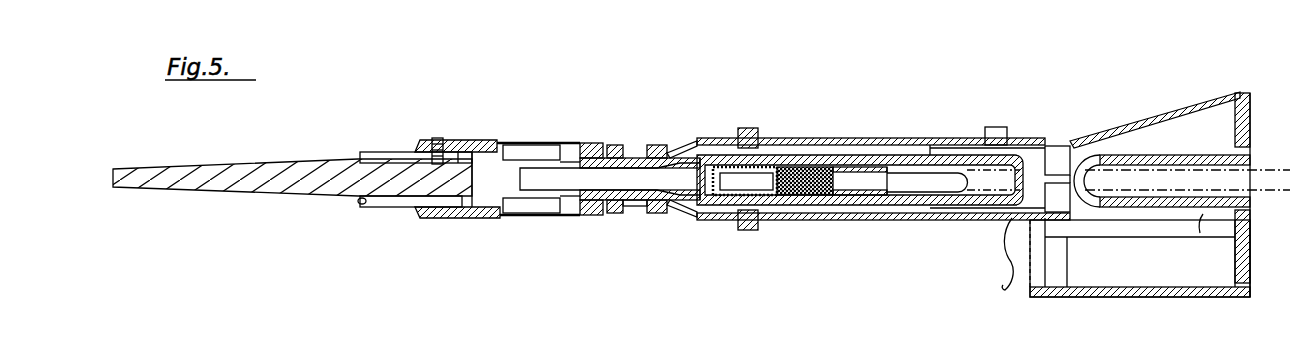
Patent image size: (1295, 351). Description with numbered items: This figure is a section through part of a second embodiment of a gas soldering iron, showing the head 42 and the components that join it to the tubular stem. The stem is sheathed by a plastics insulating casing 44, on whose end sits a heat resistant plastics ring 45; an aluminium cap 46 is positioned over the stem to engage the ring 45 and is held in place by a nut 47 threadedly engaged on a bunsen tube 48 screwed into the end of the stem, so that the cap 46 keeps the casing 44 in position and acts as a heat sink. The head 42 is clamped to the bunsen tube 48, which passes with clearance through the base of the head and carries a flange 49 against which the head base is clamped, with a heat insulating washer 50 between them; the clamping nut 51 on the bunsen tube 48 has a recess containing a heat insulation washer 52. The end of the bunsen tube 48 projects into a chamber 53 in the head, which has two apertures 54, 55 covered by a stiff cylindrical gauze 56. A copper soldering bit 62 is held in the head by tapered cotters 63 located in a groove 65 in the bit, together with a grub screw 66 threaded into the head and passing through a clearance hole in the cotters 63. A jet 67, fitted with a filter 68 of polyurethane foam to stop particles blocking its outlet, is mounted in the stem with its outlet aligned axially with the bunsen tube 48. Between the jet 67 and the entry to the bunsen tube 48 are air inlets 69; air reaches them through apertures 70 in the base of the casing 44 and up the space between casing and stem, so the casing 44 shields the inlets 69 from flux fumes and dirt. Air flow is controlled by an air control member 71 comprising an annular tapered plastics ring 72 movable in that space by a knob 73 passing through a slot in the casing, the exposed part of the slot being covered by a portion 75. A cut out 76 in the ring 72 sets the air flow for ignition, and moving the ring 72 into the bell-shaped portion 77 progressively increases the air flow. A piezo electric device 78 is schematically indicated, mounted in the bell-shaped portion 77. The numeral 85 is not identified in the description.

The head 42 is at (494, 138).
The plastics insulating casing 44 is at (805, 138).
The heat resistant plastics ring 45 is at (746, 130).
The aluminium cap 46 is at (703, 145).
The nut 47 is at (655, 213).
The bunsen tube 48 is at (632, 158).
The flange 49 is at (567, 214).
The heat insulating washer 50 is at (590, 146).
The nut 51 is at (615, 213).
The heat insulation washer 52 is at (590, 212).
The chamber 53 is at (483, 198).
The aperture 54 is at (540, 148).
The aperture 55 is at (523, 207).
The stiff cylindrical gauze 56 is at (518, 142).
The copper soldering bit 62 is at (185, 167).
The tapered cotter 63 is at (385, 152).
The groove 65 is at (360, 204).
The grub screw 66 is at (439, 138).
The jet 67 is at (765, 195).
The filter 68 is at (817, 173).
The air inlets 69 is at (718, 155).
The apertures 70 is at (1240, 96).
The air control member 71 is at (953, 140).
The annular tapered plastics ring 72 is at (1057, 146).
The knob 73 is at (992, 127).
The portion 75 is at (990, 150).
The cut out 76 is at (1062, 183).
The bell-shaped portion 77 is at (1150, 116).
The piezo electric device 78 is at (1195, 282).
The rod 85 is at (905, 192).